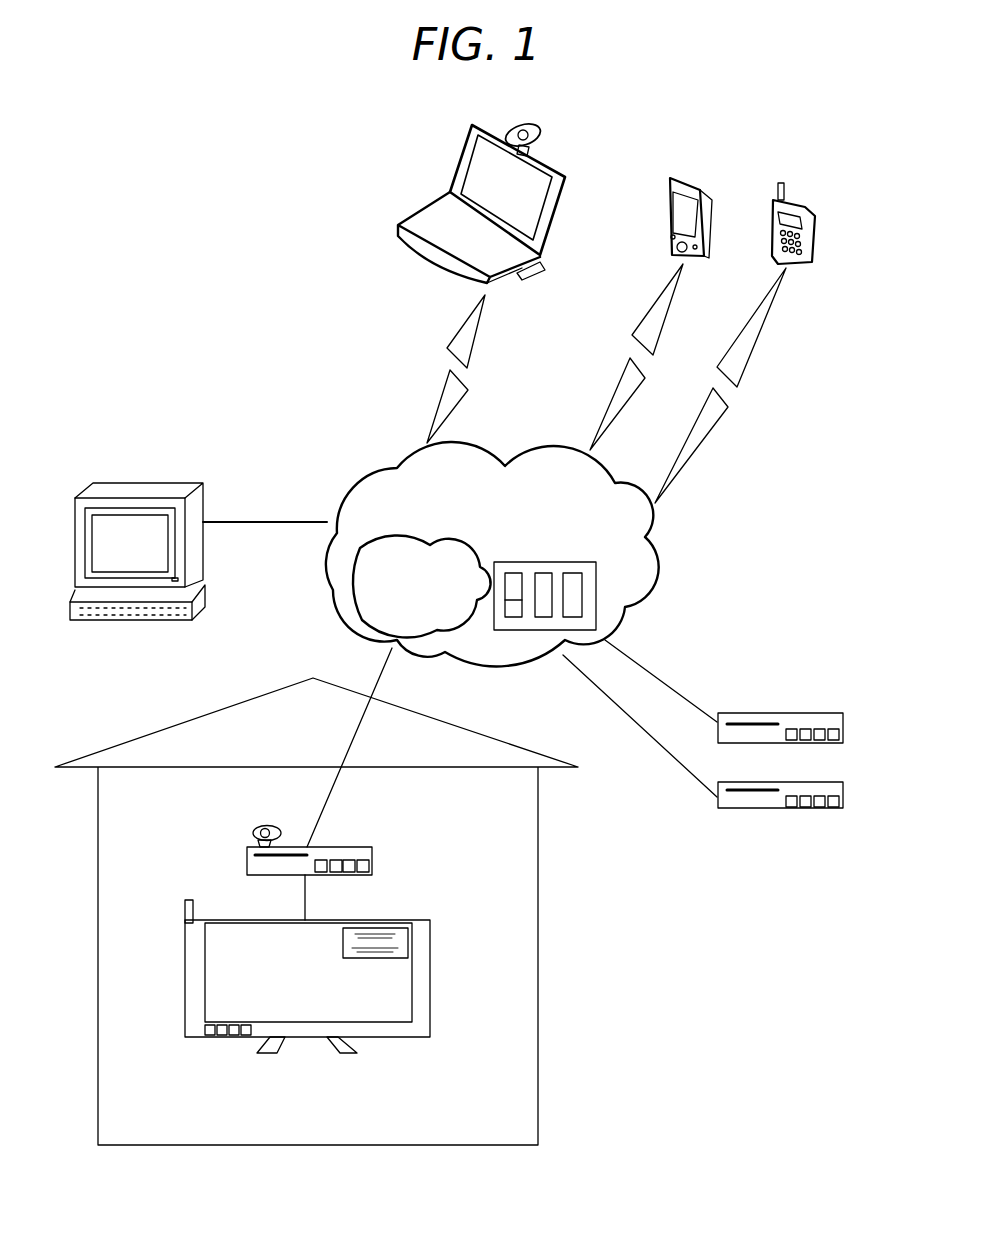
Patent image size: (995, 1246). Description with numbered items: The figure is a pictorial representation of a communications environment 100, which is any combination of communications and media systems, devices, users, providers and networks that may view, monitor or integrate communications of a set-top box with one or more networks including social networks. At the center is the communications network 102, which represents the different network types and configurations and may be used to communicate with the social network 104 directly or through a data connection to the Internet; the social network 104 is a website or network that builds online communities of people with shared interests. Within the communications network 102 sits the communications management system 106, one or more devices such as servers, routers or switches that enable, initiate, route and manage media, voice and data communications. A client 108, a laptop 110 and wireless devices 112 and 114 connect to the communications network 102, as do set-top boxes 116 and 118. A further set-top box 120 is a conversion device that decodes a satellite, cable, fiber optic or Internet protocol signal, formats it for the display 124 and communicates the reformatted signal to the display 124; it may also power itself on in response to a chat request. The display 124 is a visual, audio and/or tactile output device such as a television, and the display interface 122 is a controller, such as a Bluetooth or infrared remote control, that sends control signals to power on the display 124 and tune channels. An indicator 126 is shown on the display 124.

The communications environment 100 is at (191, 236).
The communications network 102 is at (476, 541).
The social network 104 is at (440, 624).
The communications management system 106 is at (560, 600).
The client 108 is at (150, 556).
The laptop 110 is at (485, 200).
The wireless device 112 is at (690, 217).
The wireless device 114 is at (801, 223).
The set-top box 116 is at (833, 729).
The set-top box 118 is at (843, 796).
The set-top box 120 is at (370, 860).
The display interface 122 is at (257, 828).
The display 124 is at (373, 982).
The indicator 126 is at (408, 930).